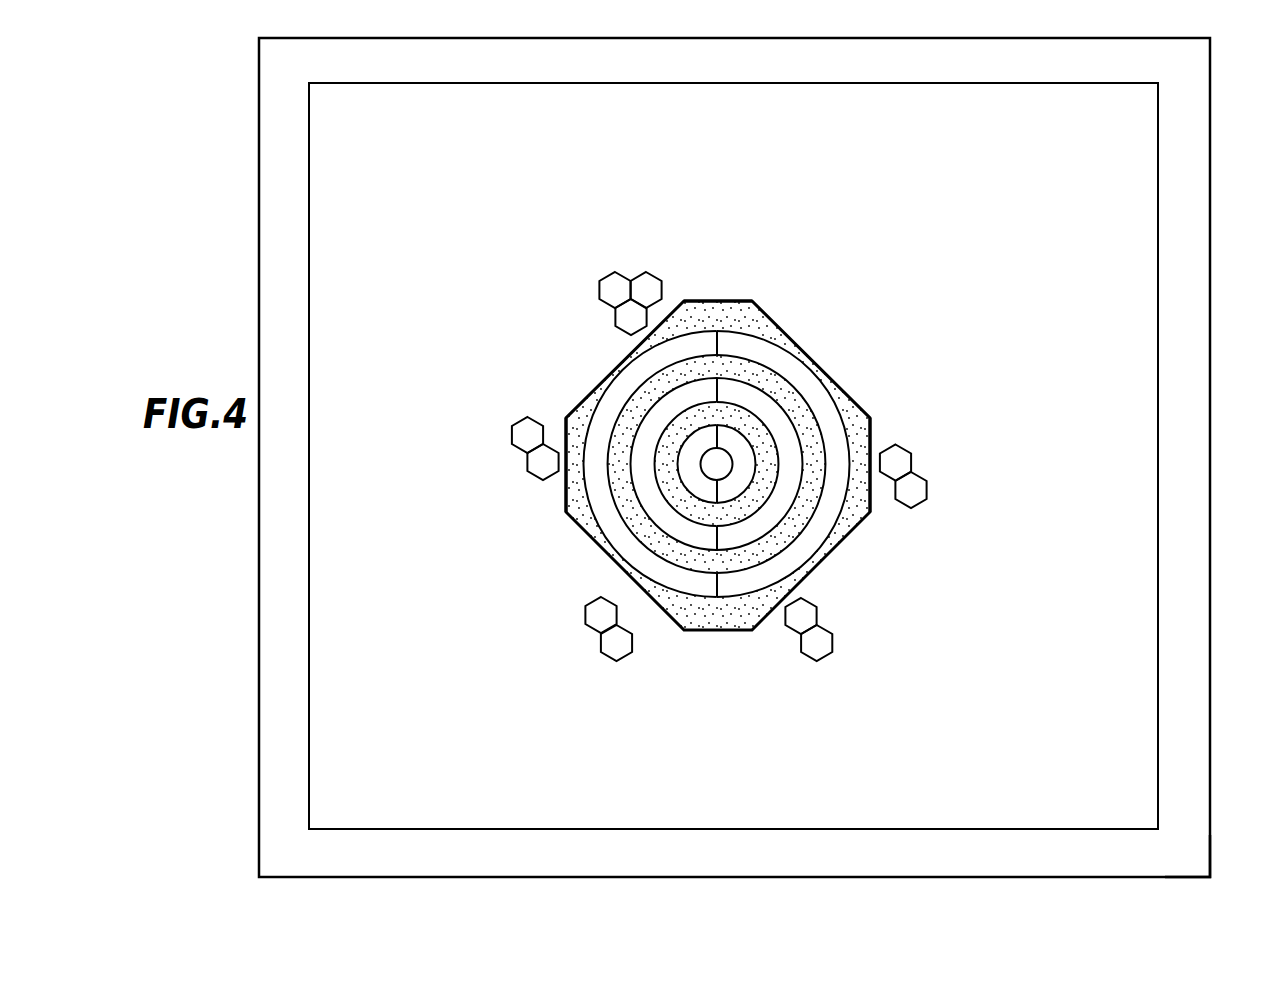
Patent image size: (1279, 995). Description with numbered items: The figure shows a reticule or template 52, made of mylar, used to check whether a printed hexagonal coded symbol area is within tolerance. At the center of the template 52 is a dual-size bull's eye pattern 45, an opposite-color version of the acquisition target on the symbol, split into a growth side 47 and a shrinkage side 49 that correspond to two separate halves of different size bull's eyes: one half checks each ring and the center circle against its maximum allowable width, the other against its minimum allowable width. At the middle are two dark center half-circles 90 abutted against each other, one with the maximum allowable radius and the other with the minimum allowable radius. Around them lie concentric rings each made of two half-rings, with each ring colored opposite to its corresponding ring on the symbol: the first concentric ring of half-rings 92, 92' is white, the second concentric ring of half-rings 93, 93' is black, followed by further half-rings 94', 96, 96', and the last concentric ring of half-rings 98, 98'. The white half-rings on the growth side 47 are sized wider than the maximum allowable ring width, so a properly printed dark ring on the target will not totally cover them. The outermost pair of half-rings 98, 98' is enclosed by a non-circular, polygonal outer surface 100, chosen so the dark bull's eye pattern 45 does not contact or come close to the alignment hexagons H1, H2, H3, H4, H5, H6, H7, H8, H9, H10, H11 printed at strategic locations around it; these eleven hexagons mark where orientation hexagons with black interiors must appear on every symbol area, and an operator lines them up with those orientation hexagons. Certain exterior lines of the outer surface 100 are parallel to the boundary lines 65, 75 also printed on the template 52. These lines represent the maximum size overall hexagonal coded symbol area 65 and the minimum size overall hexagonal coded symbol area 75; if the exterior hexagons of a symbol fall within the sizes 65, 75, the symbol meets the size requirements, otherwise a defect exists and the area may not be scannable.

The dual-size bull's eye pattern 45 is at (724, 300).
The polygonal outer surface 100 is at (767, 318).
The growth side 47 is at (871, 440).
The shrinkage side 49 is at (598, 542).
The center half-circle 90 is at (718, 453).
The first concentric half-ring 92 is at (736, 464).
The first concentric half-ring 92' is at (629, 447).
The second concentric half-ring 93 is at (795, 442).
The second concentric half-ring 93' is at (640, 444).
The concentric half-ring 94' is at (750, 524).
The concentric half-ring 96 is at (811, 466).
The concentric half-ring 96' is at (653, 470).
The last concentric half-ring 98 is at (820, 464).
The last concentric half-ring 98' is at (628, 464).
The maximum size overall hexagonal coded symbol area 65 is at (677, 877).
The minimum size overall hexagonal coded symbol area 75 is at (867, 830).
The template 52 is at (1212, 876).
The alignment hexagon H1 is at (615, 272).
The alignment hexagon H2 is at (656, 277).
The alignment hexagon H3 is at (619, 331).
The alignment hexagon H4 is at (512, 432).
The alignment hexagon H5 is at (528, 474).
The alignment hexagon H6 is at (911, 462).
The alignment hexagon H7 is at (927, 490).
The alignment hexagon H8 is at (617, 615).
The alignment hexagon H9 is at (632, 653).
The alignment hexagon H10 is at (817, 616).
The alignment hexagon H11 is at (833, 643).